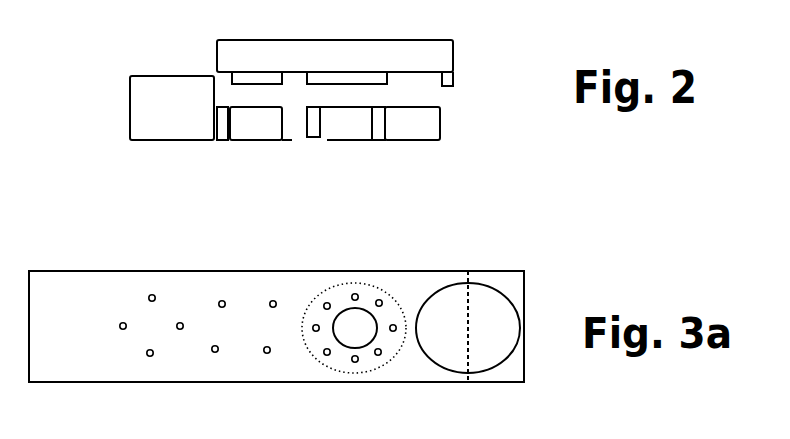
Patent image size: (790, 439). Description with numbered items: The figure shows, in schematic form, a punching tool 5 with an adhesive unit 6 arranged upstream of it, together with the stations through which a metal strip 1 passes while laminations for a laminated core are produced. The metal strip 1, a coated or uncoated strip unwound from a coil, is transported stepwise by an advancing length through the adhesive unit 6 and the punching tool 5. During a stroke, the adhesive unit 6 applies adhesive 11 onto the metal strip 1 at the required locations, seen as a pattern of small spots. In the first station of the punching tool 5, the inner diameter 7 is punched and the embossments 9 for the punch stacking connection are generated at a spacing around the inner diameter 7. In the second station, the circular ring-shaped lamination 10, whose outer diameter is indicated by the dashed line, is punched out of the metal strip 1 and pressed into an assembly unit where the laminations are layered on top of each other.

In FIG. 3a, the metal strip 1 is at (63, 285).
In FIG. 2, the punching tool 5 is at (468, 68).
In FIG. 2, the adhesive unit 6 is at (148, 101).
In FIG. 3a, the inner diameter 7 is at (240, 307).
In FIG. 3a, the embossments 9 is at (266, 353).
In FIG. 3a, the circular ring-shaped lamination 10 is at (372, 362).
In FIG. 3a, the adhesive 11 is at (121, 329).